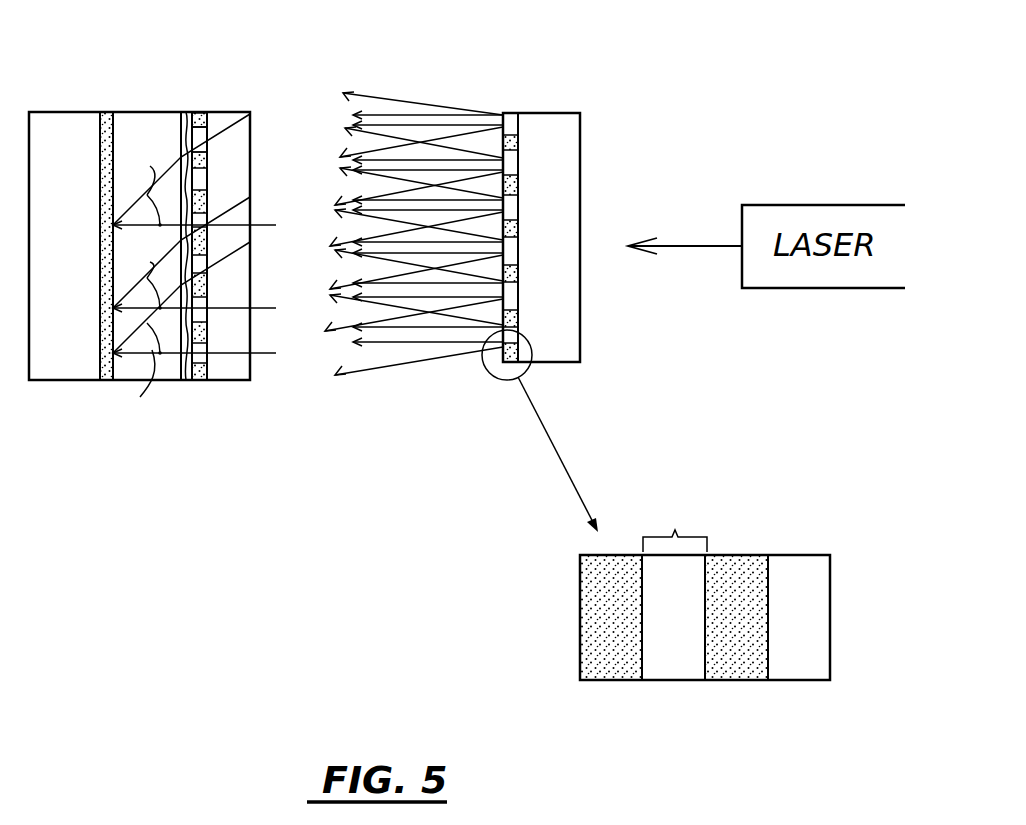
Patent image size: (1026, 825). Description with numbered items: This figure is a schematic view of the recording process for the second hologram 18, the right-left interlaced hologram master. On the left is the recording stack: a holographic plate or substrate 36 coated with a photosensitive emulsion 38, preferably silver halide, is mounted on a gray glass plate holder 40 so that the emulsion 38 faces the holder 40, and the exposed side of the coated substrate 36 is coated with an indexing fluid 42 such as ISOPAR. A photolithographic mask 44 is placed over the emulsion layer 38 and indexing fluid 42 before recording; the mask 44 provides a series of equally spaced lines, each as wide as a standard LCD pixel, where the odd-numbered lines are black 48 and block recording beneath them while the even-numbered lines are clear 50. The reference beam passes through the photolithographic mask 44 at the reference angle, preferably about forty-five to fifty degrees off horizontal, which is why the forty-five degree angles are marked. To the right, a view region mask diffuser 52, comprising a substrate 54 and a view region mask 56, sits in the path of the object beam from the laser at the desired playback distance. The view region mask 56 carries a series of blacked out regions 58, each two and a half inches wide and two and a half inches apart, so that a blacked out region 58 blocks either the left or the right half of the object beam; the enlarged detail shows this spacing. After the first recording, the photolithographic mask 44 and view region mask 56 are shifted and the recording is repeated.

The second hologram 18 is at (130, 105).
The holographic plate or substrate 36 is at (128, 373).
The photosensitive emulsion 38 is at (107, 387).
The gray glass plate holder 40 is at (55, 373).
The indexing fluid 42 is at (182, 382).
The photolithographic mask 44 is at (197, 114).
The black lines 48 is at (197, 143).
The clear lines 50 is at (200, 128).
The view region mask diffuser 52 is at (584, 128).
The substrate 54 is at (575, 188).
The view region mask 56 is at (512, 113).
The blacked out region 58 is at (490, 362).